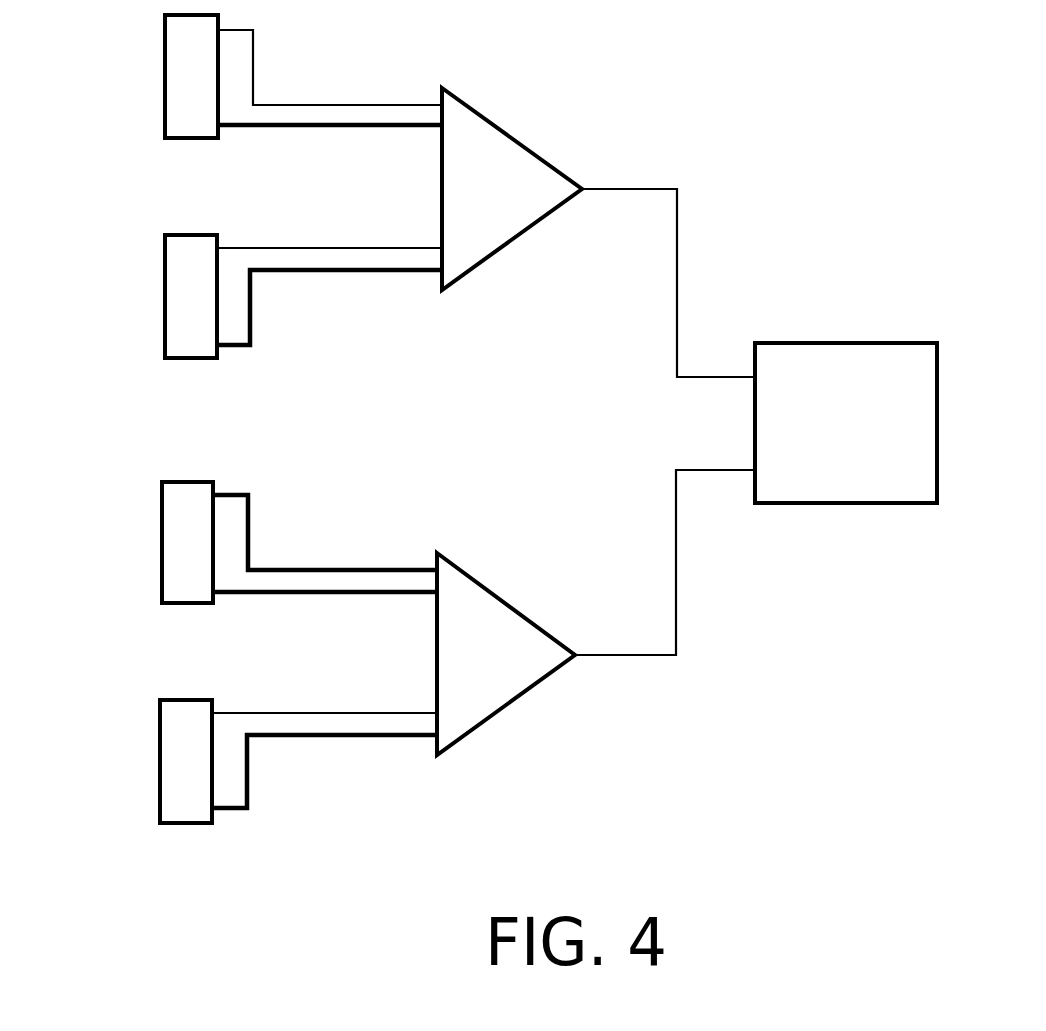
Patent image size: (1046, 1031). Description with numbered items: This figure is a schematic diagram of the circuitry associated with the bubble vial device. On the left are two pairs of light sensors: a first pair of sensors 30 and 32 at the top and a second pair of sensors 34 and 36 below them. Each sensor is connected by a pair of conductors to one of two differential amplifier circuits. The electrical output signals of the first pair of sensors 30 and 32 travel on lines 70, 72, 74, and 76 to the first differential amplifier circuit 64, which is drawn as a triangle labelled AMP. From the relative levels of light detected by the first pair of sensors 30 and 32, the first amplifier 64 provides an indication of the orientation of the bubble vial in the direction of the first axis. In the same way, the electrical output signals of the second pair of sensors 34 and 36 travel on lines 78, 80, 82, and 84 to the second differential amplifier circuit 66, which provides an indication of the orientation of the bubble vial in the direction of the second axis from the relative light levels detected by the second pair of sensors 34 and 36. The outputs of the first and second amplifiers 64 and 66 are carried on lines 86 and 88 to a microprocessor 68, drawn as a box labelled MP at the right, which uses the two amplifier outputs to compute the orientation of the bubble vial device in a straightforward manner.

The sensor 30 is at (167, 79).
The sensor 32 is at (167, 291).
The sensor 34 is at (163, 544).
The sensor 36 is at (161, 756).
The first differential amplifier circuit 64 is at (488, 140).
The second differential amplifier circuit 66 is at (485, 600).
The microprocessor 68 is at (892, 352).
The line 70 is at (254, 68).
The line 72 is at (340, 128).
The line 74 is at (287, 247).
The line 76 is at (322, 272).
The line 78 is at (320, 569).
The line 80 is at (340, 598).
The line 82 is at (283, 712).
The line 84 is at (318, 737).
The line 86 is at (677, 275).
The line 88 is at (677, 593).